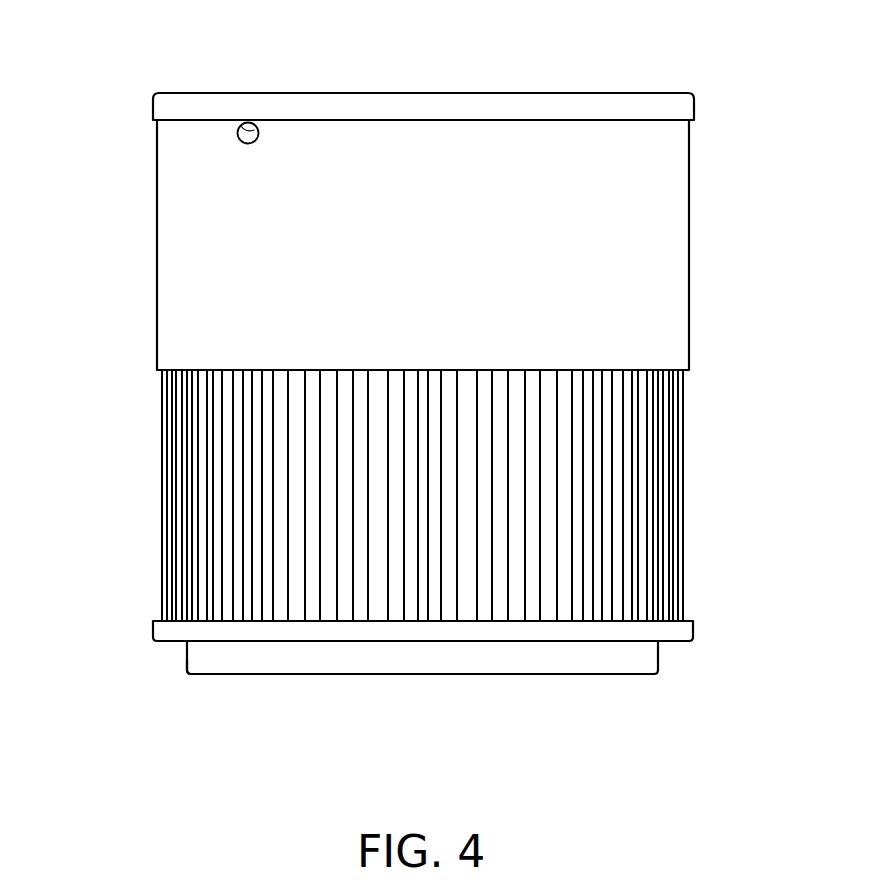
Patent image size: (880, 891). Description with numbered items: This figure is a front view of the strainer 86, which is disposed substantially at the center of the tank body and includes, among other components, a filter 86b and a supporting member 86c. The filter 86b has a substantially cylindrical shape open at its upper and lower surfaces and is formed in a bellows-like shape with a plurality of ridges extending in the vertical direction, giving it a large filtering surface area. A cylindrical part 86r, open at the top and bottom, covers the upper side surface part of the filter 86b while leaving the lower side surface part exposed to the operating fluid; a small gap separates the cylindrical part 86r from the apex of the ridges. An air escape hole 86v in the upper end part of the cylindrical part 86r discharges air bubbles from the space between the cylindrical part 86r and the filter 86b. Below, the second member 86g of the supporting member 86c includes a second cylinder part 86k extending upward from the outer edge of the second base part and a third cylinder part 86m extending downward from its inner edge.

The strainer 86 is at (135, 87).
The second member 86g is at (310, 93).
The air escape hole 86v is at (240, 125).
The cylindrical part 86r is at (172, 228).
The filter 86b is at (160, 440).
The second cylinder part 86k is at (152, 630).
The supporting member 86c is at (178, 652).
The third cylinder part 86m is at (186, 664).